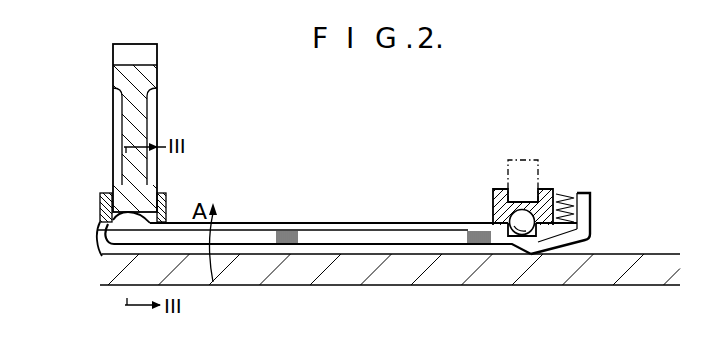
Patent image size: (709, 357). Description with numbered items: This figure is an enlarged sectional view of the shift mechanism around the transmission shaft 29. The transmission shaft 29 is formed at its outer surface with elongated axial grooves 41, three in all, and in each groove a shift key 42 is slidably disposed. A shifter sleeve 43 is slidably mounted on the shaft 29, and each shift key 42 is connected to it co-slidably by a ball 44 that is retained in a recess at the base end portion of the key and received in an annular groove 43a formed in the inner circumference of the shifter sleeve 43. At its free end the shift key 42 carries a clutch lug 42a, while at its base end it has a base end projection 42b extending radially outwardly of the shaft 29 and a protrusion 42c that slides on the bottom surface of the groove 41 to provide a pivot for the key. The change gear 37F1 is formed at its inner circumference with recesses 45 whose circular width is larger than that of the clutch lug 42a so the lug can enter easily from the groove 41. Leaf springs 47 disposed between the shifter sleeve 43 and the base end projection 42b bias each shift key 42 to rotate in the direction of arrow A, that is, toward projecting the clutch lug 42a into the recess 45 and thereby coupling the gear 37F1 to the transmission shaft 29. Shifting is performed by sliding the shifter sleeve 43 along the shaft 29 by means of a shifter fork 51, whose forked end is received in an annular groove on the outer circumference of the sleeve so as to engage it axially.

The transmission shaft 29 is at (401, 258).
The change gear 37F1 is at (148, 57).
The elongated axial groove 41 is at (296, 255).
The shift key 42 is at (351, 240).
The clutch lug 42a is at (100, 213).
The base end projection 42b is at (591, 194).
The protrusion 42c is at (524, 238).
The shifter sleeve 43 is at (495, 190).
The annular groove 43a is at (546, 244).
The ball 44 is at (512, 250).
The recess 45 is at (166, 217).
The leaf spring 47 is at (562, 192).
The shifter fork 51 is at (521, 160).